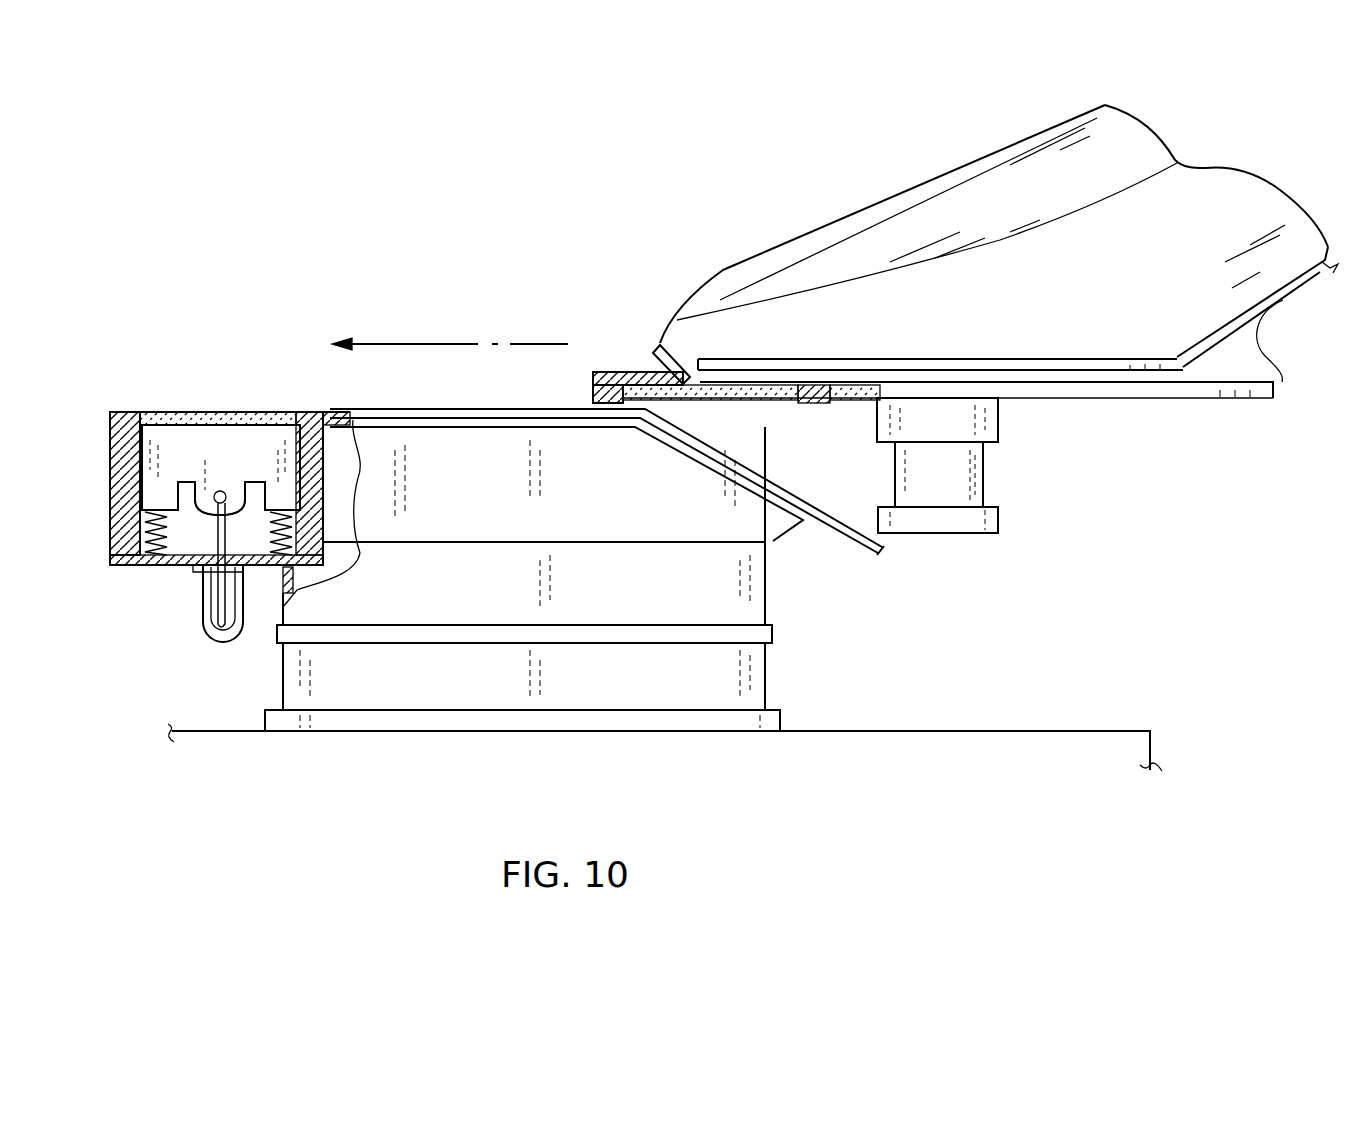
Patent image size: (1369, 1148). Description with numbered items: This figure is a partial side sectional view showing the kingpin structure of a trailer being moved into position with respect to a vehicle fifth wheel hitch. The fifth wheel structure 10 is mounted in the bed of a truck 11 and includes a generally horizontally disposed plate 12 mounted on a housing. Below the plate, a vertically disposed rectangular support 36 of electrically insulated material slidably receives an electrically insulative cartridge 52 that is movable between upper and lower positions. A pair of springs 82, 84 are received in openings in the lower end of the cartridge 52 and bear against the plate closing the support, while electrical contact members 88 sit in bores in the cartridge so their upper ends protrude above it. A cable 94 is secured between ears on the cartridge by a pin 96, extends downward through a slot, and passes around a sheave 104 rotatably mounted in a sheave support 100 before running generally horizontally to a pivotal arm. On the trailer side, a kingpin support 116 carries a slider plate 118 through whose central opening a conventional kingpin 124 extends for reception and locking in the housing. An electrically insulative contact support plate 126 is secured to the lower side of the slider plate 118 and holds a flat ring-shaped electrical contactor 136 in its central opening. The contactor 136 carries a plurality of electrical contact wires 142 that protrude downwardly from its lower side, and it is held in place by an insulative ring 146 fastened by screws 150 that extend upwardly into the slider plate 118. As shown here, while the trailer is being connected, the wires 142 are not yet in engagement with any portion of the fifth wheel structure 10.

The fifth wheel structure 10 is at (795, 617).
The truck 11 is at (932, 731).
The plate 12 is at (772, 480).
The rectangular support 36 is at (296, 426).
The cartridge 52 is at (203, 452).
The spring 82 is at (152, 533).
The spring 84 is at (275, 537).
The electrical contact member 88 is at (178, 422).
The cable 94 is at (213, 532).
The pin 96 is at (224, 492).
The sheave support 100 is at (227, 633).
The sheave 104 is at (213, 617).
The kingpin support 116 is at (780, 278).
The plate 118 is at (683, 343).
The kingpin 124 is at (967, 484).
The electrical contact support plate 126 is at (594, 397).
The electrical contactor 136 is at (720, 393).
The electrical contact wires 142 is at (750, 396).
The ring 146 is at (822, 398).
The screws 150 is at (858, 368).